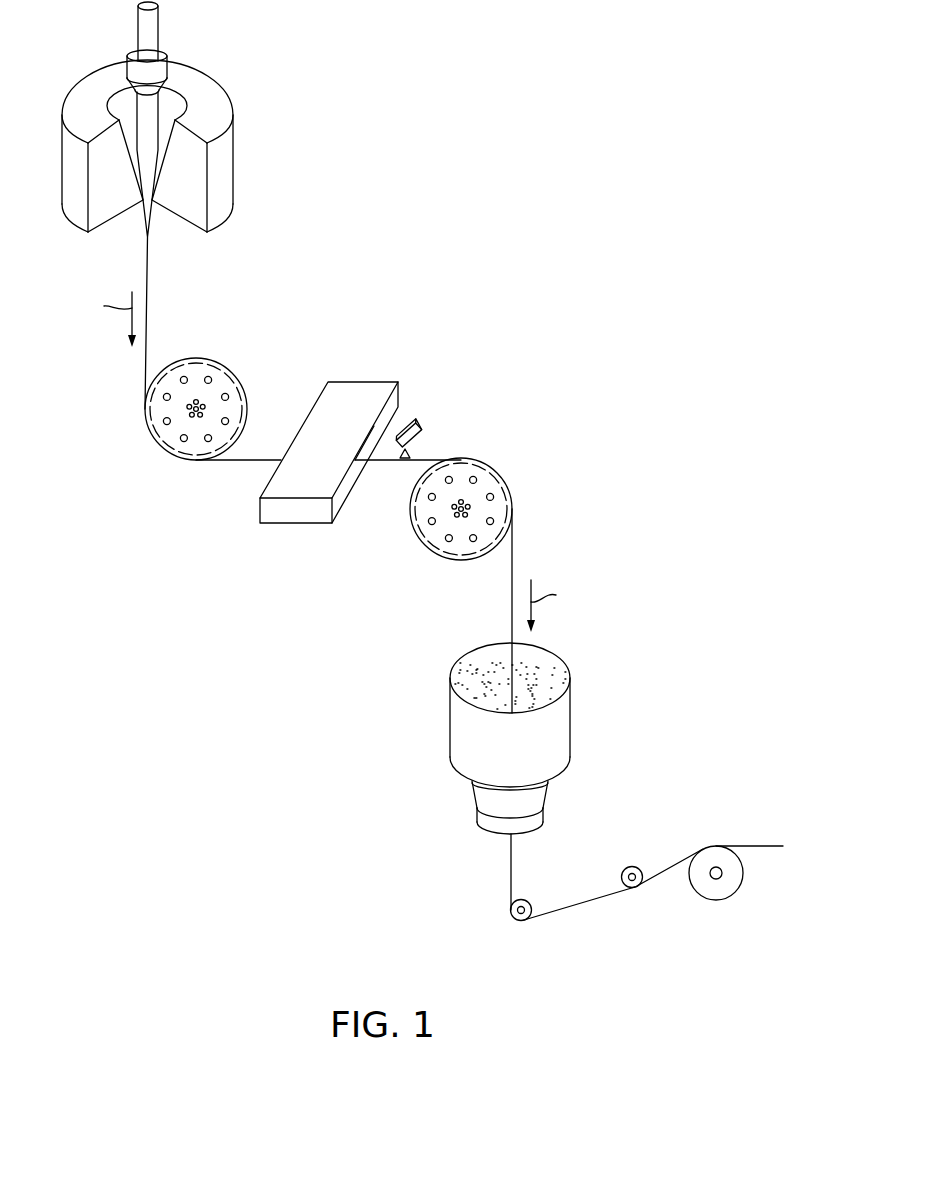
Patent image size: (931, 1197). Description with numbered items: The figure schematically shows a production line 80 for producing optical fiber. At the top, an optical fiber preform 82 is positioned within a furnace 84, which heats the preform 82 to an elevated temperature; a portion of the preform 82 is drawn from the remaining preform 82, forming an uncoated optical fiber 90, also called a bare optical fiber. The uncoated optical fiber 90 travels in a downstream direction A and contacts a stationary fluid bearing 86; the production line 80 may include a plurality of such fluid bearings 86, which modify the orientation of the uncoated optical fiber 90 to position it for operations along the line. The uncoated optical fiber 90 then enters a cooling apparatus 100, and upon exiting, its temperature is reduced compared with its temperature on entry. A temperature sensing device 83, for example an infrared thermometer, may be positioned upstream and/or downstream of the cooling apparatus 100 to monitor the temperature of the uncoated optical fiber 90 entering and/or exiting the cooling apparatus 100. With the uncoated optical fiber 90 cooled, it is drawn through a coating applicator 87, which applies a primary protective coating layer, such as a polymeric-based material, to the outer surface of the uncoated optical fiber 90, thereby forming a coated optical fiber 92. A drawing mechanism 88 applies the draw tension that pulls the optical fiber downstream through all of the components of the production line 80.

The production line 80 is at (436, 160).
The optical fiber preform 82 is at (157, 113).
The furnace 84 is at (233, 110).
The uncoated optical fiber 90 is at (147, 260).
The stationary fluid bearing 86 is at (211, 360).
The cooling apparatus 100 is at (364, 384).
The temperature sensing device 83 is at (412, 421).
The coating applicator 87 is at (571, 723).
The coated optical fiber 92 is at (512, 868).
The drawing mechanism 88 is at (716, 900).